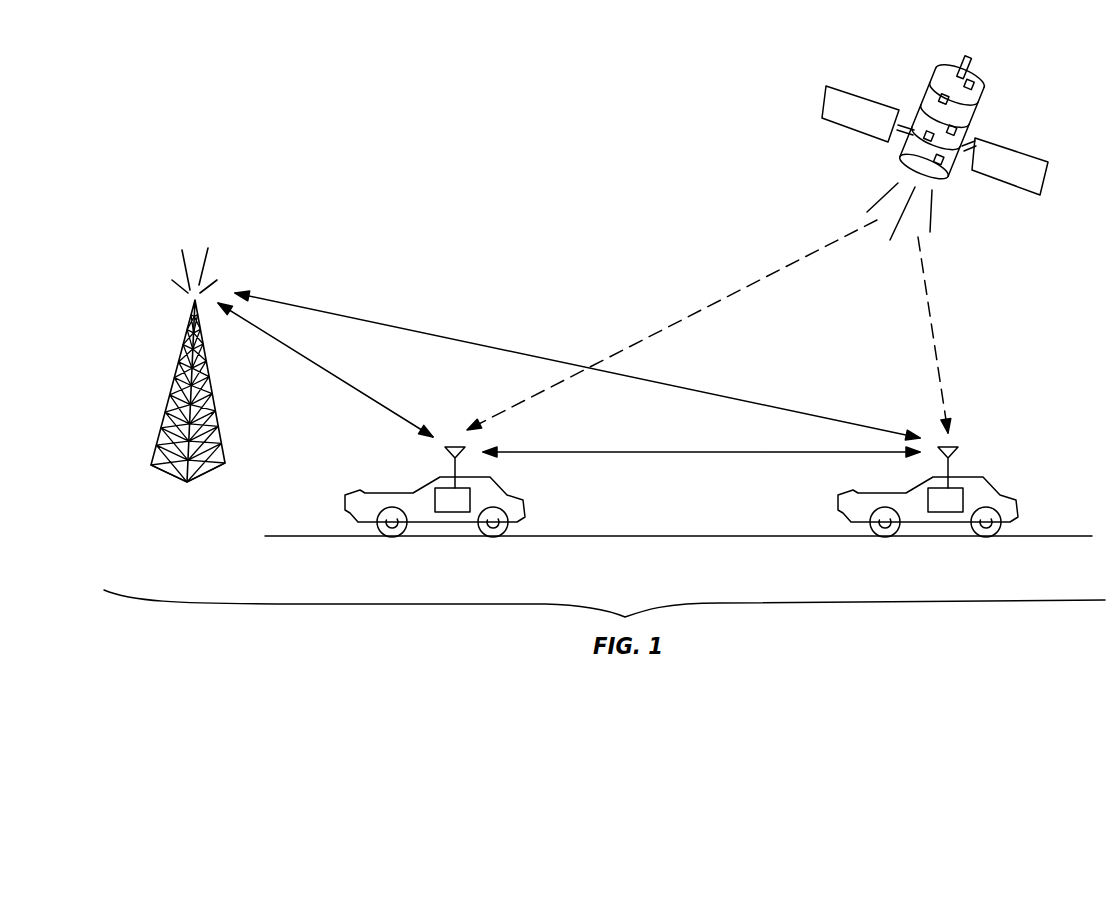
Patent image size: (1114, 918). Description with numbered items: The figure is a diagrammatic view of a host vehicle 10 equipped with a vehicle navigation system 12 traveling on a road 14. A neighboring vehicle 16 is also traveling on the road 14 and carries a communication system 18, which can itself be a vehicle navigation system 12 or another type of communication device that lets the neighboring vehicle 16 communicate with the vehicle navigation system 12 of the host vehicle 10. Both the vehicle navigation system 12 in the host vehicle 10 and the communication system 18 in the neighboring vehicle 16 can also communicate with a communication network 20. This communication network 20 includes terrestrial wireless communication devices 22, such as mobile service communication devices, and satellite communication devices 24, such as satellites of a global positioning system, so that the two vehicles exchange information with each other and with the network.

The host vehicle 10 is at (995, 492).
The vehicle navigation system 12 is at (947, 508).
The road 14 is at (1047, 537).
The neighboring vehicle 16 is at (502, 492).
The communication system 18 is at (453, 508).
The communication network 20 is at (652, 80).
The terrestrial wireless communication device 22 is at (163, 363).
The satellite communication device 24 is at (998, 93).